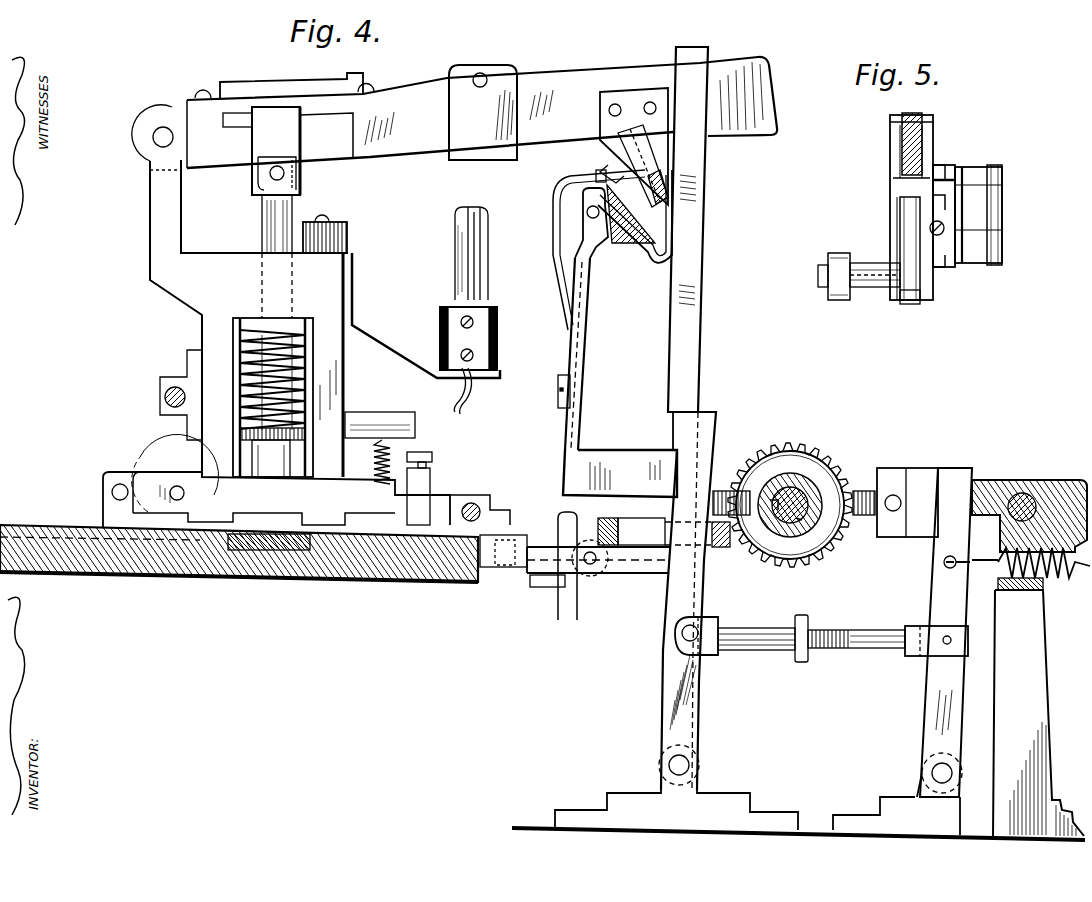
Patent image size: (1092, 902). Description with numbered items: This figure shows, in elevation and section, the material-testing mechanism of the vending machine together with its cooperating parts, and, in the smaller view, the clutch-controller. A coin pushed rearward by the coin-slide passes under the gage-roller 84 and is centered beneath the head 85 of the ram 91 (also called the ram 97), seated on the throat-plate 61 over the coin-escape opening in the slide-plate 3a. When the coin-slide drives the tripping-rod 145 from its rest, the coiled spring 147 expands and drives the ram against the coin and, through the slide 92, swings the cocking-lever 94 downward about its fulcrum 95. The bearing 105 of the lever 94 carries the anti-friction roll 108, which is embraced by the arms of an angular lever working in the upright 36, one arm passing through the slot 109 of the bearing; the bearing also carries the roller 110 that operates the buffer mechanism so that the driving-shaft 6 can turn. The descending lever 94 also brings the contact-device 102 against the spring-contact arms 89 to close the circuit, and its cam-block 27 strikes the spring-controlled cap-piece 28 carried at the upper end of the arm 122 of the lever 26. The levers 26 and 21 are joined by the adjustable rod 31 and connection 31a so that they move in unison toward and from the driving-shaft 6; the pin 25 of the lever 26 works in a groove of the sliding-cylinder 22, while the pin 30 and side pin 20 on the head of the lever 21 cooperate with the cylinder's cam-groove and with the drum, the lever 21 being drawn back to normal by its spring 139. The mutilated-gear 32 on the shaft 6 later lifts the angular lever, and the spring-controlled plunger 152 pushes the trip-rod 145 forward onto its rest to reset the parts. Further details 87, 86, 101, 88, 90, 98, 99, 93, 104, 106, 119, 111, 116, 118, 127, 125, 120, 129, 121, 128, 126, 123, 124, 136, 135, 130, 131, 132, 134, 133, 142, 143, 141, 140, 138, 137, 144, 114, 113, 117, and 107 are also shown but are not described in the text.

In FIG. 4, the slide-plate 3a is at (345, 585).
In FIG. 4, the throat-plate 61 is at (280, 552).
In FIG. 4, the fulcrum 95 is at (153, 137).
In FIG. 4, the arm 87 is at (158, 217).
In FIG. 4, the bracket body 86 is at (330, 365).
In FIG. 4, the slide 92 is at (250, 142).
In FIG. 4, the pivot pin 101 is at (270, 176).
In FIG. 4, the ram 91 is at (264, 228).
In FIG. 4, the ram 97 is at (340, 243).
In FIG. 4, the coiled spring 147 is at (240, 345).
In FIG. 4, the head of the ram 85 is at (272, 462).
In FIG. 4, the gage-roller 84 is at (450, 470).
In FIG. 4, the spring-contact arms 89 is at (455, 245).
In FIG. 4, the block 88 is at (441, 318).
In FIG. 4, the screws 90 is at (475, 352).
In FIG. 4, the cocking-lever 94 is at (735, 80).
In FIG. 5, the cocking-lever 94 is at (918, 114).
In FIG. 4, the plate 98 is at (258, 82).
In FIG. 4, the lugs 99 is at (370, 82).
In FIG. 4, the plate 93 is at (326, 135).
In FIG. 4, the contact-device 102 is at (455, 118).
In FIG. 4, the block 104 is at (482, 73).
In FIG. 4, the bearing 105 is at (630, 90).
In FIG. 5, the bearing 105 is at (890, 146).
In FIG. 4, the hole 106 is at (614, 104).
In FIG. 4, the link 119 is at (632, 140).
In FIG. 5, the link 119 is at (958, 172).
In FIG. 4, the link end 111 is at (618, 165).
In FIG. 5, the link end 111 is at (940, 270).
In FIG. 4, the screw 116 is at (600, 178).
In FIG. 5, the screw 116 is at (945, 229).
In FIG. 4, the cam-block 27 is at (666, 190).
In FIG. 5, the cam-block 27 is at (943, 165).
In FIG. 4, the upright 36 is at (700, 166).
In FIG. 4, the cap 118 is at (672, 212).
In FIG. 5, the cap 118 is at (980, 205).
In FIG. 4, the cap-piece 28 is at (556, 196).
In FIG. 4, the wire end 127 is at (570, 180).
In FIG. 4, the wire 125 is at (563, 258).
In FIG. 4, the pivot 120 is at (586, 212).
In FIG. 4, the lever head 129 is at (600, 233).
In FIG. 4, the neck 121 is at (598, 255).
In FIG. 4, the cam 128 is at (603, 240).
In FIG. 4, the anti-friction roll 108 is at (650, 262).
In FIG. 5, the anti-friction roll 108 is at (910, 304).
In FIG. 4, the arm 122 is at (585, 442).
In FIG. 4, the stop 126 is at (558, 396).
In FIG. 4, the spring-controlled plunger 152 is at (620, 473).
In FIG. 4, the lever 26 is at (668, 606).
In FIG. 4, the pivot 123 is at (669, 766).
In FIG. 4, the base 124 is at (798, 808).
In FIG. 4, the base 136 is at (878, 815).
In FIG. 4, the pivot 135 is at (932, 773).
In FIG. 4, the pivot block 130 is at (682, 633).
In FIG. 4, the block 131 is at (690, 650).
In FIG. 4, the adjustable connection 31a is at (756, 627).
In FIG. 4, the nut 132 is at (801, 615).
In FIG. 4, the adjustable rod 31 is at (852, 633).
In FIG. 4, the block 134 is at (925, 655).
In FIG. 4, the pin 133 is at (945, 637).
In FIG. 4, the sliding-cylinder 22 is at (815, 470).
In FIG. 4, the mutilated-gear 32 is at (795, 440).
In FIG. 4, the driving-shaft 6 is at (775, 540).
In FIG. 4, the pin 25 is at (725, 491).
In FIG. 4, the pin 30 is at (865, 517).
In FIG. 4, the pin 20 is at (894, 495).
In FIG. 4, the upright 142 is at (964, 480).
In FIG. 4, the screw 143 is at (975, 503).
In FIG. 4, the lever 21 is at (925, 712).
In FIG. 4, the block 141 is at (1060, 495).
In FIG. 4, the spring 140 is at (1085, 570).
In FIG. 4, the plate 138 is at (1040, 582).
In FIG. 4, the spring 139 is at (1012, 592).
In FIG. 4, the column 137 is at (1038, 714).
In FIG. 4, the rod 144 is at (605, 552).
In FIG. 4, the tripping-rod 145 is at (560, 527).
In FIG. 5, the slot 109 is at (905, 236).
In FIG. 5, the lug 114 is at (935, 190).
In FIG. 5, the lug 113 is at (935, 204).
In FIG. 5, the cylinder 117 is at (960, 188).
In FIG. 5, the bolt 107 is at (875, 288).
In FIG. 5, the roller 110 is at (840, 298).